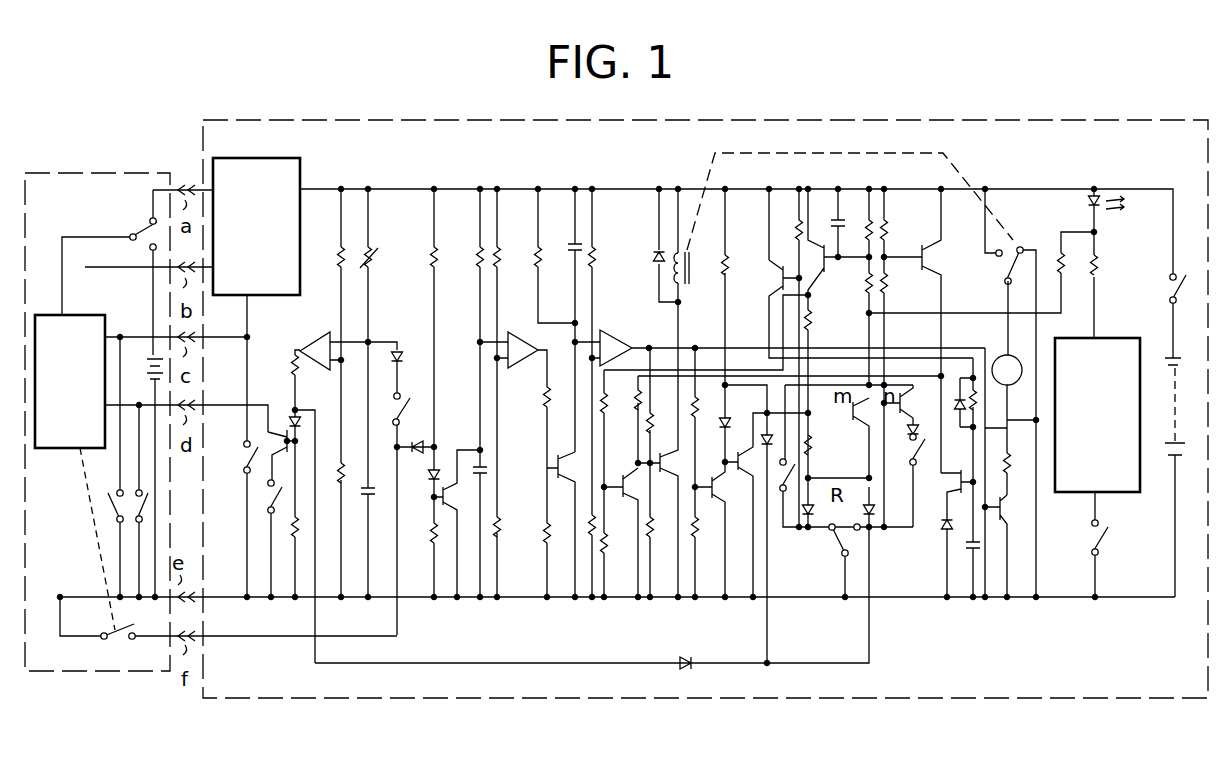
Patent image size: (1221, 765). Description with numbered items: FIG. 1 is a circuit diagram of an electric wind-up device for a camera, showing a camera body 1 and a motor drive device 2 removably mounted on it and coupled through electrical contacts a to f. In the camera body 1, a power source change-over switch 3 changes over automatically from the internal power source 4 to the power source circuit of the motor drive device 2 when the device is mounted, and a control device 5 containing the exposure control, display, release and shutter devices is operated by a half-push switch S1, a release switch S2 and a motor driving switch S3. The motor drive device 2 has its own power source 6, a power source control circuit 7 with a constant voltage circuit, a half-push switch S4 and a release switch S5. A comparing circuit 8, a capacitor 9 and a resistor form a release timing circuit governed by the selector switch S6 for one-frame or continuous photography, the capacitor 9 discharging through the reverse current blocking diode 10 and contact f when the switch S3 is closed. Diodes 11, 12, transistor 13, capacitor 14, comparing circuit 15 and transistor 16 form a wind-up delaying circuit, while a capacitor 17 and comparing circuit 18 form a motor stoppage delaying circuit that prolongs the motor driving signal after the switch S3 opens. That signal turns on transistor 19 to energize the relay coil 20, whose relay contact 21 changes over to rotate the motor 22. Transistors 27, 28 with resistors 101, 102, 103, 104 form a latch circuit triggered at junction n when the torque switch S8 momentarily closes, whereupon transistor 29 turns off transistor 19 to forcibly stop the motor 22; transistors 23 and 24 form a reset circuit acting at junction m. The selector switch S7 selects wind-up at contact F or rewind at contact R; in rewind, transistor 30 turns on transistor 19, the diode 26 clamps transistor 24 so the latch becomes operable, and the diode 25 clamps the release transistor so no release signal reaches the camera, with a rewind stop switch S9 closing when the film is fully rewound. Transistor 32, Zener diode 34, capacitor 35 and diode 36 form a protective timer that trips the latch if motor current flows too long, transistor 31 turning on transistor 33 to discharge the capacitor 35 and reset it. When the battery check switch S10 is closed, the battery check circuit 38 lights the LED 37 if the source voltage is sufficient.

The camera body 1 is at (137, 672).
The motor drive device 2 is at (487, 699).
The power source change-over switch 3 is at (143, 226).
The power source 4 is at (149, 354).
The control device 5 is at (60, 315).
The power source 6 is at (1172, 456).
The power source control circuit 7 is at (300, 166).
The comparing circuit 8 is at (320, 335).
The capacitor 9 is at (364, 498).
The reverse current blocking diode 10 is at (402, 350).
The diode 11 is at (416, 450).
The diode 12 is at (432, 483).
The transistor 13 is at (443, 485).
The capacitor 14 is at (488, 468).
The comparing circuit 15 is at (520, 370).
The transistor 16 is at (562, 482).
The capacitor 17 is at (568, 244).
The comparing circuit 18 is at (618, 332).
The transistor 19 is at (662, 478).
The relay coil 20 is at (694, 286).
The relay contact 21 is at (1000, 272).
The motor 22 is at (997, 356).
The transistor 23 is at (734, 458).
The transistor 24 is at (740, 477).
The diode 25 is at (686, 658).
The diode 26 is at (766, 430).
The transistor 27 is at (810, 446).
The transistor 28 is at (826, 270).
The transistor 29 is at (628, 474).
The transistor 30 is at (932, 254).
The transistor 31 is at (776, 278).
The transistor 32 is at (948, 492).
The transistor 33 is at (1003, 468).
The Zener diode 34 is at (946, 538).
The capacitor 35 is at (968, 550).
The diode 36 is at (964, 427).
The LED 37 is at (1086, 202).
The battery check circuit 38 is at (1120, 494).
The resistor 101 is at (869, 210).
The resistor 102 is at (865, 294).
The resistor 103 is at (814, 324).
The resistor 104 is at (812, 456).
The half-push switch S1 is at (108, 492).
The release switch S2 is at (148, 493).
The motor driving switch S3 is at (108, 646).
The half-push switch S4 is at (243, 444).
The release switch S5 is at (262, 505).
The selector switch S6 is at (416, 408).
The selector switch S7 is at (842, 551).
The torque switch S8 is at (784, 514).
The rewind stop switch S9 is at (910, 464).
The battery check switch S10 is at (1087, 550).